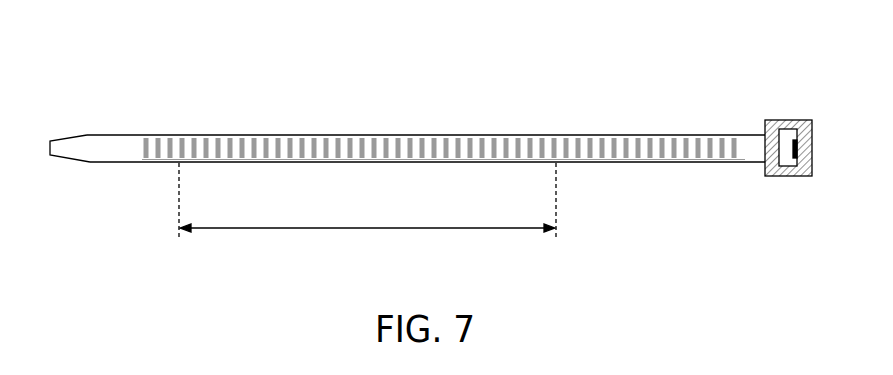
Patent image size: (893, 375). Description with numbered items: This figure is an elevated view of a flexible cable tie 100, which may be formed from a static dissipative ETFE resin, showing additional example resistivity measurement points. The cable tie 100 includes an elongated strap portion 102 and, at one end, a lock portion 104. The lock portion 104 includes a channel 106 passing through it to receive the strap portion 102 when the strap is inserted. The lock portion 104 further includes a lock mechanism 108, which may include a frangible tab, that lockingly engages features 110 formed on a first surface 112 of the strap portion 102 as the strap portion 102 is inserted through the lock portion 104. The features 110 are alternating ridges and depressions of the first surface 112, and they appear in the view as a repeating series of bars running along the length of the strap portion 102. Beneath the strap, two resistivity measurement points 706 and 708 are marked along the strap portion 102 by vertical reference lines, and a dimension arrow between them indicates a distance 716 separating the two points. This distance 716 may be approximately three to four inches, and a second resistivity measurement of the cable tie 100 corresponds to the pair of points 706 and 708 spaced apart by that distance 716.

The flexible cable tie 100 is at (142, 48).
The strap portion 102 is at (761, 83).
The lock portion 104 is at (803, 82).
The channel 106 is at (790, 165).
The lock mechanism 108 is at (787, 140).
The features 110 is at (232, 152).
The first surface 112 is at (128, 149).
The resistivity measurement point 706 is at (177, 163).
The resistivity measurement point 708 is at (558, 163).
The distance 716 is at (448, 228).